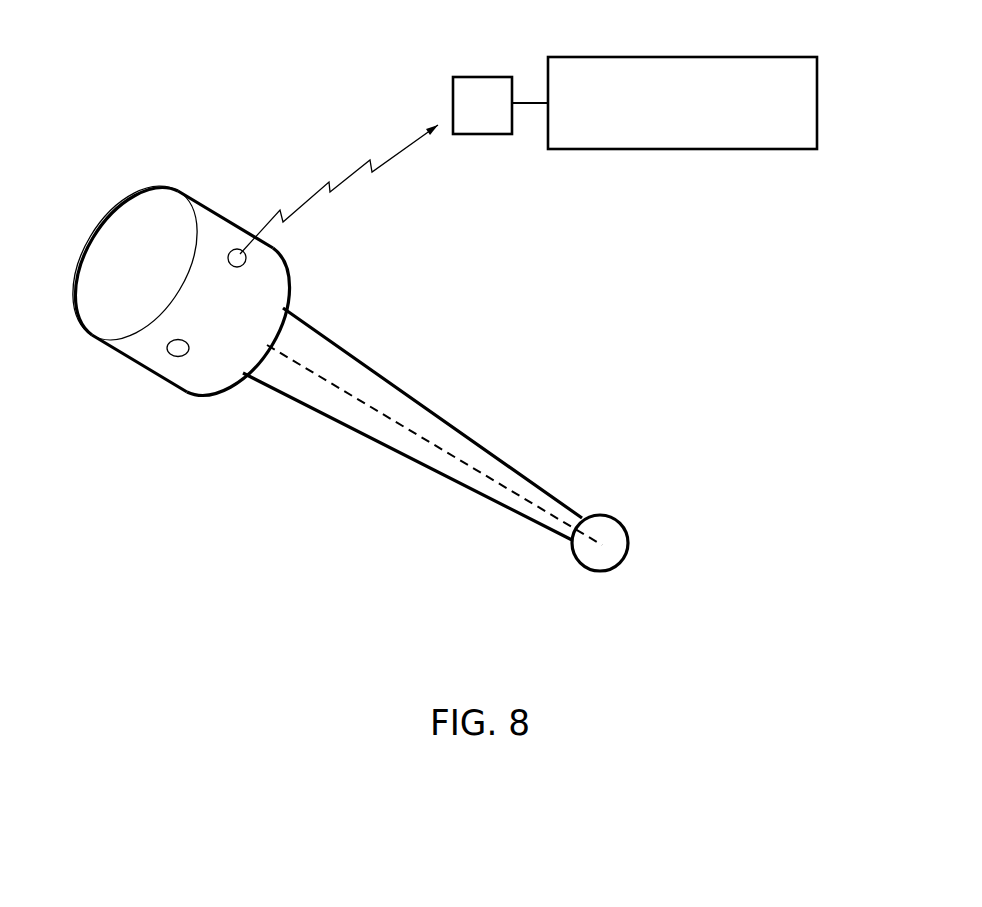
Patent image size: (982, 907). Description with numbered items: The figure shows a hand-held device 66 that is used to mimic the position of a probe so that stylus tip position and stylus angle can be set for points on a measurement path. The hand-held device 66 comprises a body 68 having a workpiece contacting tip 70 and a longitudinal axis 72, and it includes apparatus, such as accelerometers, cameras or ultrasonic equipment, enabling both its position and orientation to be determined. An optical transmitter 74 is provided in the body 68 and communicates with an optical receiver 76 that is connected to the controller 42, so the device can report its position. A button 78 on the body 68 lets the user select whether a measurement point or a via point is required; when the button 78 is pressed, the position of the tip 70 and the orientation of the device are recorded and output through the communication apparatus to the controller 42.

The controller 42 is at (810, 87).
The hand-held device 66 is at (240, 438).
The body 68 is at (298, 313).
The workpiece contacting tip 70 is at (607, 524).
The longitudinal axis 72 is at (590, 535).
The optical transmitter 74 is at (238, 250).
The optical receiver 76 is at (460, 94).
The button 78 is at (172, 355).